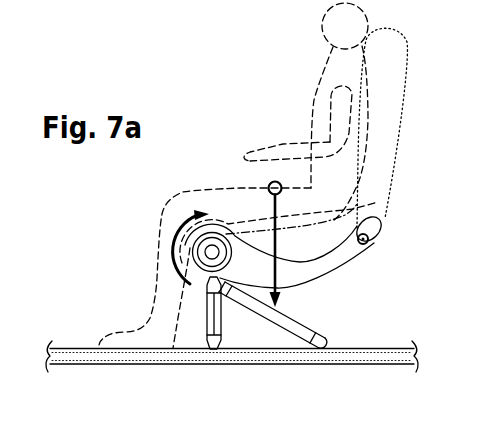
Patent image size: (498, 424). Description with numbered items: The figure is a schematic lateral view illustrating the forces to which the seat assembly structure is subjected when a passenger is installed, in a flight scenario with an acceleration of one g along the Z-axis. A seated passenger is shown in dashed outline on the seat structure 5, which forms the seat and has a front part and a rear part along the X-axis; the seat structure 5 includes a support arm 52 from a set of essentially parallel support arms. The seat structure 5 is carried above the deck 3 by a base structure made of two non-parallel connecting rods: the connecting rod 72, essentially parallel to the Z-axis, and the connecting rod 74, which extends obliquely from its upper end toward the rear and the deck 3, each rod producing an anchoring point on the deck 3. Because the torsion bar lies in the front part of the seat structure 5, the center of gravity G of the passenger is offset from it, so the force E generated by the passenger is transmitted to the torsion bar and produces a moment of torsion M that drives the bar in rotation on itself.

The deck 3 is at (67, 348).
The seat structure 5 is at (366, 272).
The support arm 52 is at (313, 268).
The connecting rod 72 is at (207, 320).
The connecting rod 74 is at (300, 334).
The moment of torsion M is at (173, 233).
The force E is at (252, 206).
The center of gravity G is at (275, 181).